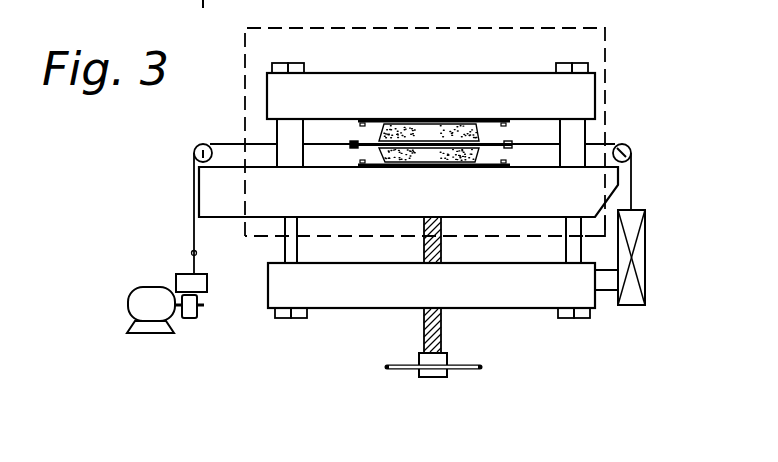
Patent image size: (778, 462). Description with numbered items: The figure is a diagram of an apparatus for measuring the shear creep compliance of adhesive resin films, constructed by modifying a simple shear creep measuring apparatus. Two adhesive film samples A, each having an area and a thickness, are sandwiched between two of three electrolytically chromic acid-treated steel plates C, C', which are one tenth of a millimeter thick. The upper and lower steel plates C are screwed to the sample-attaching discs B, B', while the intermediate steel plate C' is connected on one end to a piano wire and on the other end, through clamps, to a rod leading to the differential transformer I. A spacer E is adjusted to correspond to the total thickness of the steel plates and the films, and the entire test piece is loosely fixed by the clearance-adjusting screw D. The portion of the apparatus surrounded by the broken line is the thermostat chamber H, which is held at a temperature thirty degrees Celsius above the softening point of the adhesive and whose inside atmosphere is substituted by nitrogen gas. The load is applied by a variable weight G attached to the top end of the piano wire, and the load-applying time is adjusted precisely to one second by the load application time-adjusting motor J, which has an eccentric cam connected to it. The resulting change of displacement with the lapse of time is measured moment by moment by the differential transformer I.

The sample A is at (429, 144).
The sample-attaching disc B is at (431, 91).
The sample-attaching disc B' is at (408, 192).
The electrolytically chromic acid-treated steel plate C is at (419, 145).
The electrolytically chromic acid-treated steel plate C' is at (408, 174).
The clearance-adjusting screw D is at (433, 309).
The spacer E is at (431, 143).
The weight G is at (203, 226).
The thermostat chamber H is at (425, 118).
The differential transformer I is at (627, 257).
The load application time-adjusting motor J is at (165, 310).